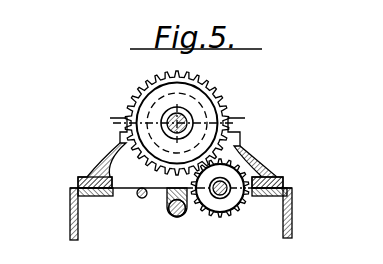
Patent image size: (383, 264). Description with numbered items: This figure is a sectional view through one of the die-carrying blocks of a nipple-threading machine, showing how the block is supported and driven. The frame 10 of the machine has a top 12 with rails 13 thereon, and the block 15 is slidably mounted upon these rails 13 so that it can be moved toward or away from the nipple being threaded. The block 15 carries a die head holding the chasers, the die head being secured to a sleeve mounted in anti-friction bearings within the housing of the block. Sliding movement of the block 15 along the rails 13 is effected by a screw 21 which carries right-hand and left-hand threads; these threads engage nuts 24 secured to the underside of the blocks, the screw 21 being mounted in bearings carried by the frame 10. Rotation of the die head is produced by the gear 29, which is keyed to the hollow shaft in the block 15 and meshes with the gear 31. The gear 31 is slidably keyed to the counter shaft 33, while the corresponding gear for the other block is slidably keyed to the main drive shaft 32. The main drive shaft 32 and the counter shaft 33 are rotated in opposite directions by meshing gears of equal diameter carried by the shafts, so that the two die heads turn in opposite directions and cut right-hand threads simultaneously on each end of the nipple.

The frame 10 is at (70, 213).
The top 12 is at (80, 198).
The rails 13 is at (92, 186).
The block 15 is at (118, 145).
The screw 21 is at (171, 217).
The nuts 24 is at (168, 195).
The gear 29 is at (208, 97).
The gear 31 is at (224, 212).
The main drive shaft 32 is at (152, 188).
The counter shaft 33 is at (227, 195).